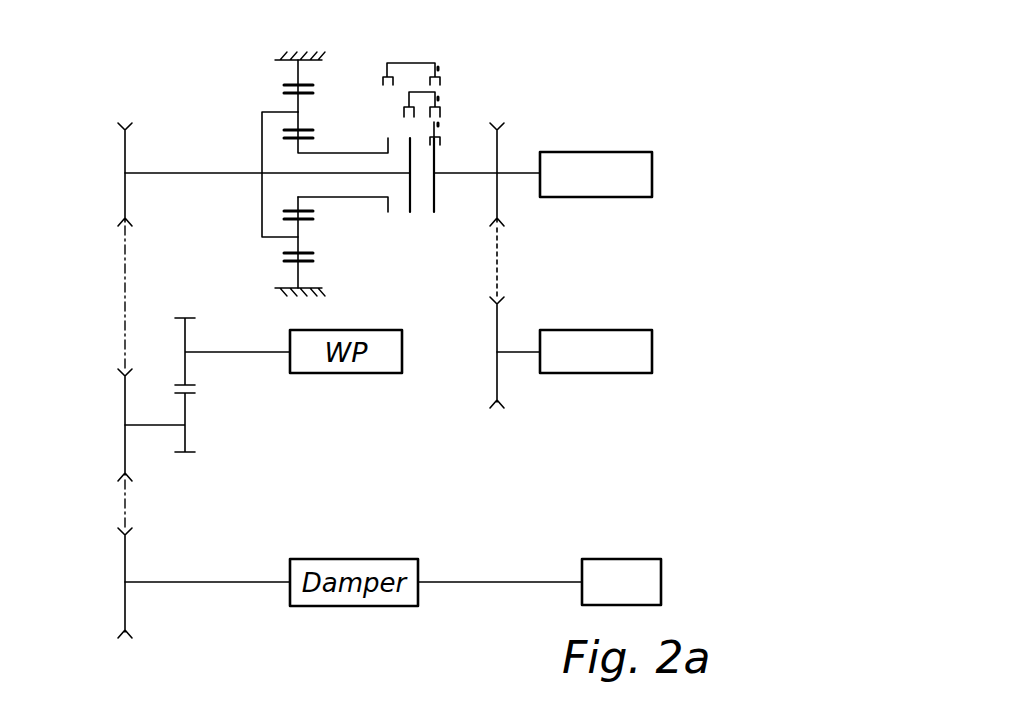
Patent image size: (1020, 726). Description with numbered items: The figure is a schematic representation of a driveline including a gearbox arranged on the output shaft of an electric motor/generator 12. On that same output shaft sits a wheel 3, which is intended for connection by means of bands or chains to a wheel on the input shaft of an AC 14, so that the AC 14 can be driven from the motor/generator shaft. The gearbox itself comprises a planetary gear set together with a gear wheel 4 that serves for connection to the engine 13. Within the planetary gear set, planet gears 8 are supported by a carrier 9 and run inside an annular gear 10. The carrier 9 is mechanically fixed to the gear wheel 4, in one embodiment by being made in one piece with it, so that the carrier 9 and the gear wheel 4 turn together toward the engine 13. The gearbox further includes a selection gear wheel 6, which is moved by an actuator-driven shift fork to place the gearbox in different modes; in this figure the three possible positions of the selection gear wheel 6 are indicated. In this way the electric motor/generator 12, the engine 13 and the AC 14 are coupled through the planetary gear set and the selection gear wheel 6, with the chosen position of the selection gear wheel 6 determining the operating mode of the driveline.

The wheel 3 is at (500, 148).
The gear wheel 4 is at (125, 150).
The selection gear wheel 6 is at (457, 50).
The planet gears 8 is at (293, 100).
The carrier 9 is at (270, 237).
The annular gear 10 is at (297, 80).
The electric motor/generator 12 is at (637, 152).
The engine 13 is at (637, 559).
The AC 14 is at (637, 330).